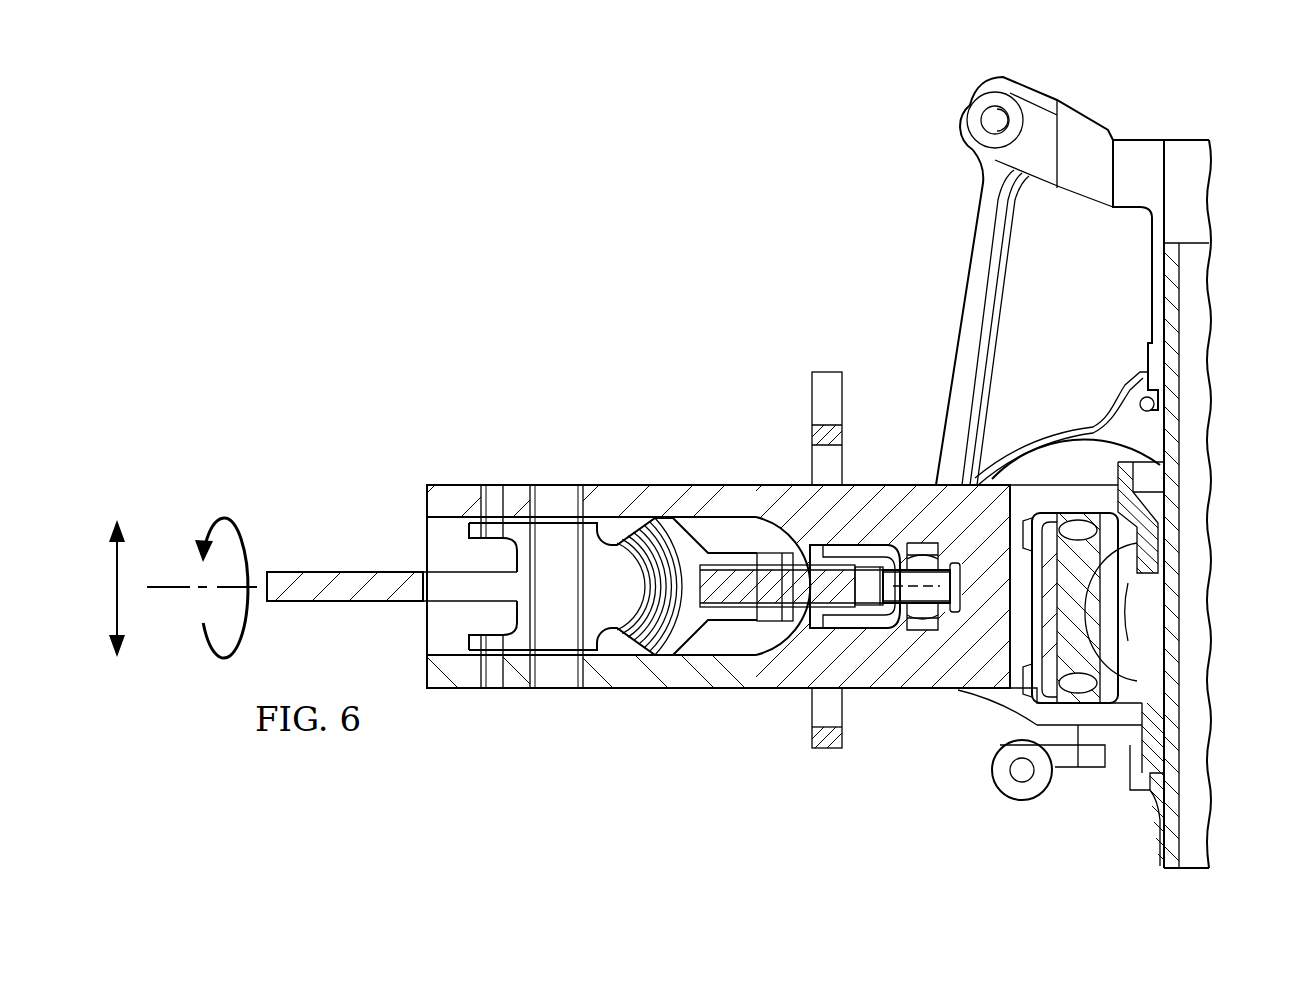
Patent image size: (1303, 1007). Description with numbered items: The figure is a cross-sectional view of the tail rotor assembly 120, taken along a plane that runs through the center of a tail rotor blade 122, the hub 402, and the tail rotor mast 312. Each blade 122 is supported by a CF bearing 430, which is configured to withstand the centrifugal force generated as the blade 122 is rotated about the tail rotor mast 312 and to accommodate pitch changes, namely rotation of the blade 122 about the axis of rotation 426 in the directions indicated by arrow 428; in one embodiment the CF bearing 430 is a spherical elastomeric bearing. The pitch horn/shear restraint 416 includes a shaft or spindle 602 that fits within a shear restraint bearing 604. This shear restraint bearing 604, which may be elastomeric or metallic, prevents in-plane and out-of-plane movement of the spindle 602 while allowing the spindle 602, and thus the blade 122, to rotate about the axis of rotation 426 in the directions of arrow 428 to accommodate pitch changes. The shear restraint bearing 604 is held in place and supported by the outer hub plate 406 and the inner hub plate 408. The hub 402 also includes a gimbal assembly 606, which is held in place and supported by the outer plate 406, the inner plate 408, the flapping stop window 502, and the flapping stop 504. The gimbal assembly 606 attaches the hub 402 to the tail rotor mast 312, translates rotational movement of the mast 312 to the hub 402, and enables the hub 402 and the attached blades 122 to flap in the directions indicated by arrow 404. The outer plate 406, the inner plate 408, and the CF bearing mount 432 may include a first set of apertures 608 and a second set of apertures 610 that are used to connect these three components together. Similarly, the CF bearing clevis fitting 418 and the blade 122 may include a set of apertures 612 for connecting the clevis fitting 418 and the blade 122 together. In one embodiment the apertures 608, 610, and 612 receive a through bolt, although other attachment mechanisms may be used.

The tail rotor assembly 120 is at (667, 268).
The tail rotor blade 122 is at (337, 572).
The tail rotor mast 312 is at (1197, 333).
The hub 402 is at (942, 772).
The arrow 404 is at (115, 572).
The outer hub plate 406 is at (857, 484).
The inner hub plate 408 is at (882, 690).
The pitch horn/shear restraint 416 is at (812, 390).
The CF bearing clevis fitting 418 is at (693, 530).
The axis of rotation 426 is at (168, 588).
The arrow 428 is at (222, 520).
The CF bearing 430 is at (642, 535).
The CF bearing mount 432 is at (594, 598).
The flapping stop window 502 is at (1086, 767).
The flapping stop 504 is at (1125, 790).
The spindle 602 is at (925, 593).
The shear restraint bearing 604 is at (932, 540).
The gimbal assembly 606 is at (1078, 548).
The first set of apertures 608 is at (495, 492).
The second set of apertures 610 is at (557, 492).
The set of apertures 612 is at (770, 553).